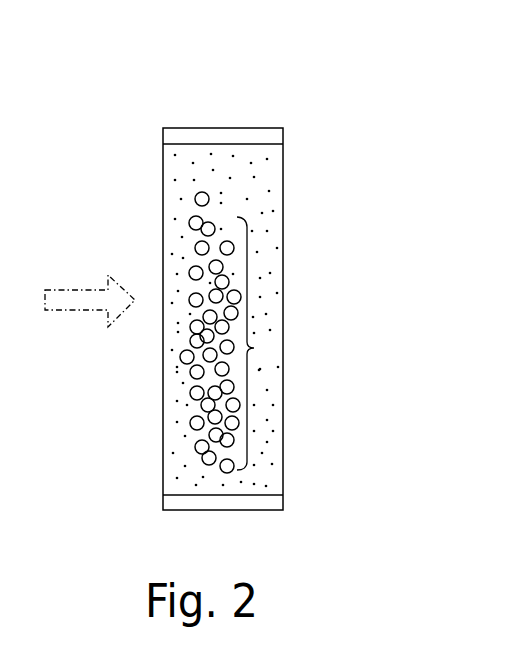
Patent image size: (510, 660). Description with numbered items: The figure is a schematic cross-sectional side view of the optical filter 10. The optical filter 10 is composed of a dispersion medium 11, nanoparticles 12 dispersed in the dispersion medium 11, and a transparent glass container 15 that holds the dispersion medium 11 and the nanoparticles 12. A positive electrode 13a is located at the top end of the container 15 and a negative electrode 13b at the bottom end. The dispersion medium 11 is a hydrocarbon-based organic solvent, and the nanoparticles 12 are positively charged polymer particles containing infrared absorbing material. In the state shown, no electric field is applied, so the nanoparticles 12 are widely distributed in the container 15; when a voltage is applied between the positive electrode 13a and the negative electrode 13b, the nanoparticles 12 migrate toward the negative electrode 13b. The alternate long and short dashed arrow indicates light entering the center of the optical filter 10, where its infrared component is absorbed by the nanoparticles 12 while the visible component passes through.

The optical filter 10 is at (280, 104).
The dispersion medium 11 is at (270, 178).
The nanoparticles 12 is at (255, 348).
The positive electrode 13a is at (275, 133).
The negative electrode 13b is at (270, 503).
The transparent glass container 15 is at (163, 210).